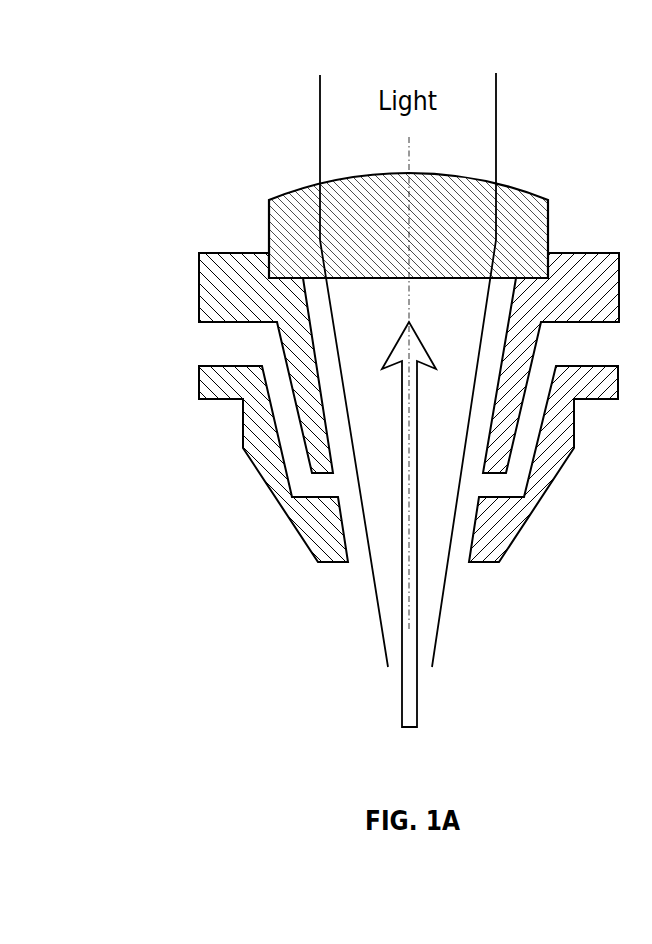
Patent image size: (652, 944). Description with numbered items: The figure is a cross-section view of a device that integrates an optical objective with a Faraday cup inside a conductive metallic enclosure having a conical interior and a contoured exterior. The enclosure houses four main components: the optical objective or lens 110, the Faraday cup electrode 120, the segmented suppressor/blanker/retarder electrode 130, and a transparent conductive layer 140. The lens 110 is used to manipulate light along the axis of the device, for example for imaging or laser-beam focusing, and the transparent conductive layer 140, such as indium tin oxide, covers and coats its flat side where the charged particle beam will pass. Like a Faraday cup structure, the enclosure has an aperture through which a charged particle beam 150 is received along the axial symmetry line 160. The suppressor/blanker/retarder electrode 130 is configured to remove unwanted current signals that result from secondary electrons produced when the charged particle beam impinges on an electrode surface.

The optical objective/element 110 is at (298, 188).
The Faraday cup electrode 120 is at (199, 288).
The segmented suppressor/blanker/retarder electrode 130 is at (281, 507).
The transparent conductive layer 140 is at (470, 275).
The charged particle beam 150 is at (416, 690).
The axial symmetry line 160 is at (409, 150).